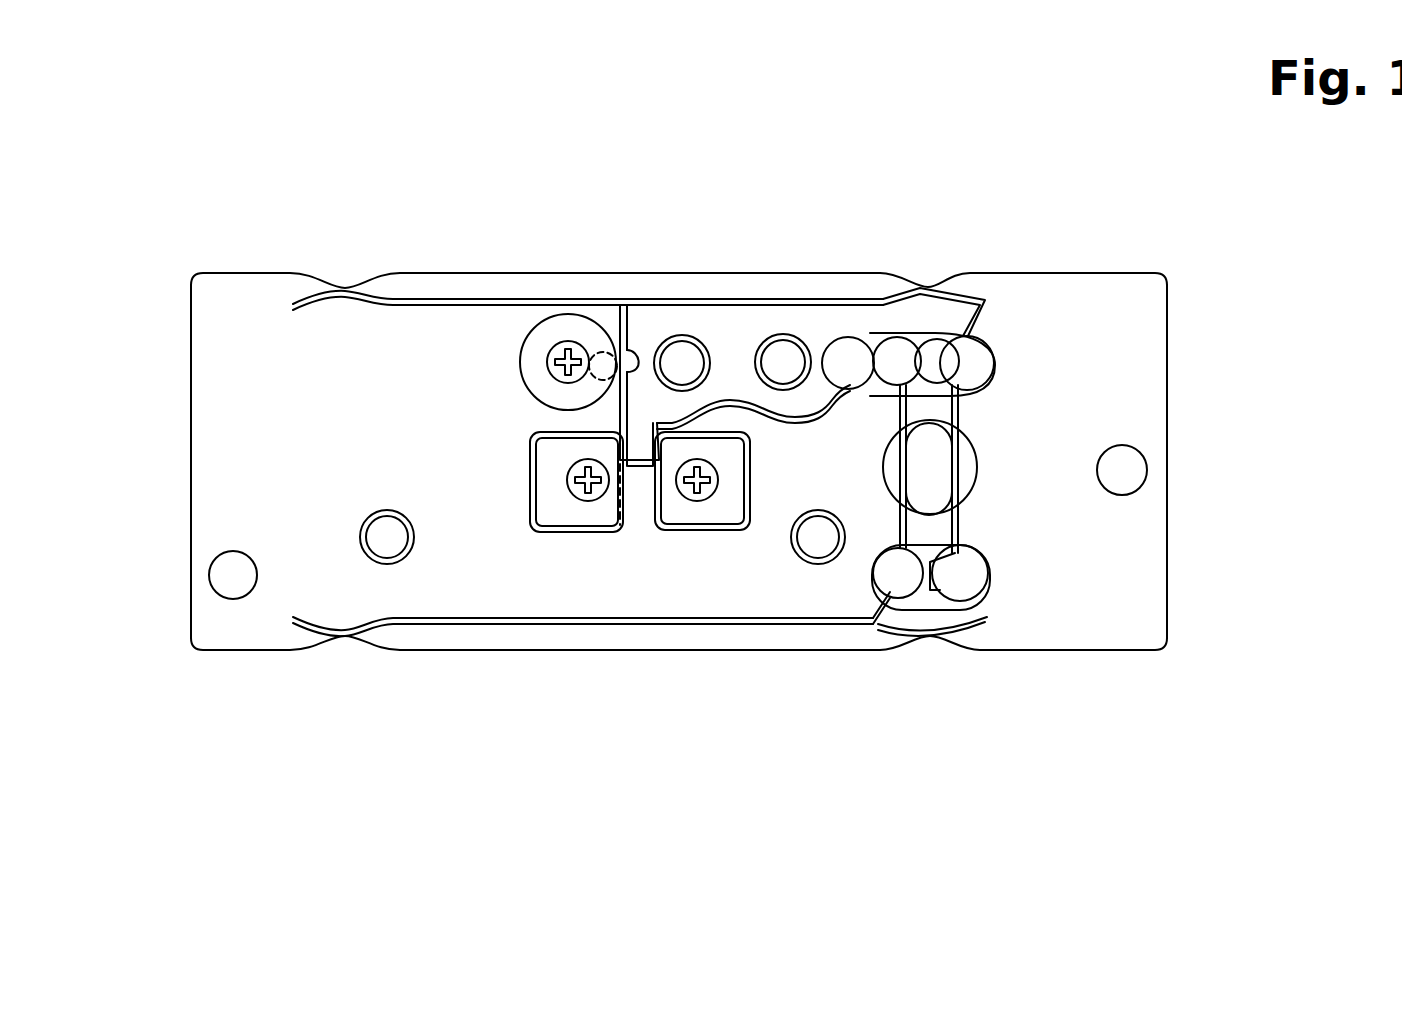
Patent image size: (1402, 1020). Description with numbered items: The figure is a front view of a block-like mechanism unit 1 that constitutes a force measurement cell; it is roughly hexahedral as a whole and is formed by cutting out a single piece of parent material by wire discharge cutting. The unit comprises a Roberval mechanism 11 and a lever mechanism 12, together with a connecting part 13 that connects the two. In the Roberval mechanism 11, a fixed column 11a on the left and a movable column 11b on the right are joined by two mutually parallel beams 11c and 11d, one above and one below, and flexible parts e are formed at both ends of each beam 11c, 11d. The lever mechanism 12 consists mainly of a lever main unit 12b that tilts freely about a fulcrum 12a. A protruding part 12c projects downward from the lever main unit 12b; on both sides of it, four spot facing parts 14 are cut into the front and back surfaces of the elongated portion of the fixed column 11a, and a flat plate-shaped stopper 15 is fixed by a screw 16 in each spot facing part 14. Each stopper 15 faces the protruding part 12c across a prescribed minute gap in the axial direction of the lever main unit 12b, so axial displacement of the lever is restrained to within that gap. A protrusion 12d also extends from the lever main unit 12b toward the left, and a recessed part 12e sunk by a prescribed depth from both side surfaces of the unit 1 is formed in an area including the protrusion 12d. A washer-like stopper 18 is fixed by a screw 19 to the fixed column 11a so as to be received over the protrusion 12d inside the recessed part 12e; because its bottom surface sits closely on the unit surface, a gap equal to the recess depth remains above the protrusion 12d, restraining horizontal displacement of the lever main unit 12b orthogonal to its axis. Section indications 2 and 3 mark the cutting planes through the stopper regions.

The block-like mechanism unit 1 is at (1022, 208).
The section line 2 is at (520, 456).
The section line 3 is at (511, 360).
The Roberval mechanism 11 is at (547, 697).
The fixed column 11a is at (222, 377).
The movable column 11b is at (1110, 307).
The beam 11c is at (725, 283).
The beam 11d is at (647, 640).
The lever mechanism 12 is at (783, 317).
The fulcrum 12a is at (877, 363).
The lever main unit 12b is at (697, 327).
The protruding part 12c is at (637, 450).
The protrusion 12d is at (582, 347).
The recessed part 12e is at (633, 347).
The connecting part 13 is at (933, 457).
The spot facing part 14 is at (527, 488).
The stopper 15 is at (568, 508).
The screw 16 is at (545, 437).
The washer-like stopper 18 is at (547, 327).
The screw 19 is at (545, 343).
The flexible part e is at (345, 286).